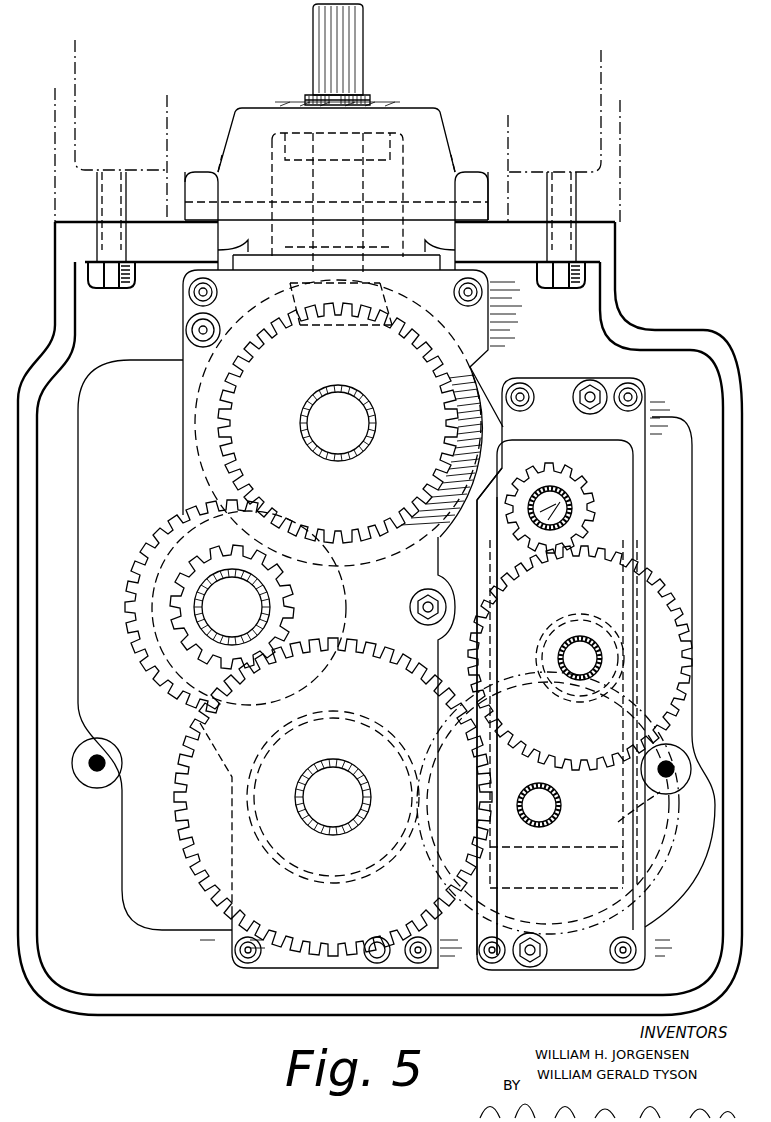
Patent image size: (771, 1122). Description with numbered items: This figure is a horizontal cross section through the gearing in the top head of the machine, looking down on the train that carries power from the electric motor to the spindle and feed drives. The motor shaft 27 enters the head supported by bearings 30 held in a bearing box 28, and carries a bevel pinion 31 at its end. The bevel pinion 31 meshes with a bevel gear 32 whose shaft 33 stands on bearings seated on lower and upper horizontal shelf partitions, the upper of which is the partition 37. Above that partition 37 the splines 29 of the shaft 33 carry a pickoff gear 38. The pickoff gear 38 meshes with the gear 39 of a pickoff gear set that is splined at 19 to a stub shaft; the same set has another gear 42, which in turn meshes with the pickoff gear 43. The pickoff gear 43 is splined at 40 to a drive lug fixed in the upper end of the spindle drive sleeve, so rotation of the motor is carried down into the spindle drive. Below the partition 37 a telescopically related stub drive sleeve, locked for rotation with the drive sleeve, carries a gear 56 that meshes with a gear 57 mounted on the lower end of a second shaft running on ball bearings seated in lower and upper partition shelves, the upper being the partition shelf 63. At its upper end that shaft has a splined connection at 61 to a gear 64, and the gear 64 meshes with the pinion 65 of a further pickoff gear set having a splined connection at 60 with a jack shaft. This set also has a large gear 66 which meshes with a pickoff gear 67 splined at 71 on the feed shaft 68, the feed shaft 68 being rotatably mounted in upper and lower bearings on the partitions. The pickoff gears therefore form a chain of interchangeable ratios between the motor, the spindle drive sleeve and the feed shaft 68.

The splined connection 19 is at (265, 582).
The motor shaft 27 is at (322, 70).
The bearing box 28 is at (302, 125).
The splines 29 is at (362, 412).
The bearings 30 is at (378, 125).
The bevel pinion 31 is at (380, 308).
The bevel gear 32 is at (462, 418).
The shaft 33 is at (360, 428).
The upper horizontal shelf partition 37 is at (428, 545).
The pickoff gear 38 is at (380, 514).
The gear 39 is at (180, 672).
The splined connection 40 is at (362, 786).
The gear 42 is at (270, 612).
The pickoff gear 43 is at (192, 758).
The gear 56 is at (348, 878).
The gear 57 is at (660, 870).
The splined connection 60 is at (584, 640).
The splined connection 61 is at (562, 806).
The upper horizontal partition shelf 63 is at (642, 488).
The gear 64 is at (618, 822).
The pinion 65 is at (586, 648).
The large gear 66 is at (676, 626).
The pickoff gear 67 is at (572, 492).
The feed shaft 68 is at (555, 495).
The splined connection 71 is at (572, 510).